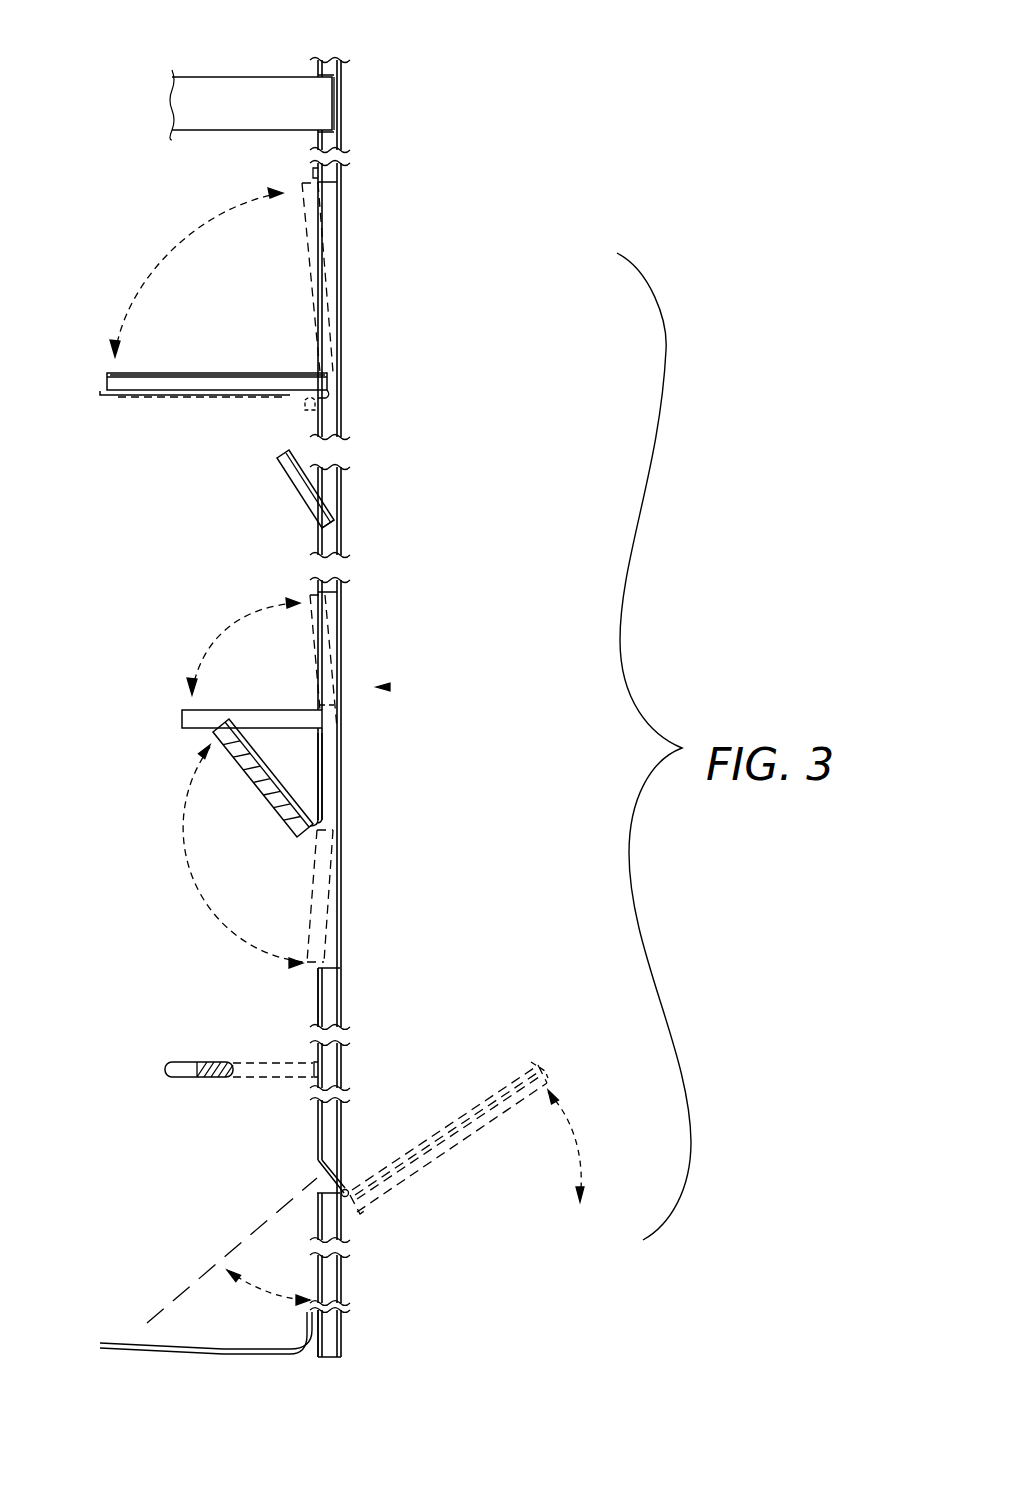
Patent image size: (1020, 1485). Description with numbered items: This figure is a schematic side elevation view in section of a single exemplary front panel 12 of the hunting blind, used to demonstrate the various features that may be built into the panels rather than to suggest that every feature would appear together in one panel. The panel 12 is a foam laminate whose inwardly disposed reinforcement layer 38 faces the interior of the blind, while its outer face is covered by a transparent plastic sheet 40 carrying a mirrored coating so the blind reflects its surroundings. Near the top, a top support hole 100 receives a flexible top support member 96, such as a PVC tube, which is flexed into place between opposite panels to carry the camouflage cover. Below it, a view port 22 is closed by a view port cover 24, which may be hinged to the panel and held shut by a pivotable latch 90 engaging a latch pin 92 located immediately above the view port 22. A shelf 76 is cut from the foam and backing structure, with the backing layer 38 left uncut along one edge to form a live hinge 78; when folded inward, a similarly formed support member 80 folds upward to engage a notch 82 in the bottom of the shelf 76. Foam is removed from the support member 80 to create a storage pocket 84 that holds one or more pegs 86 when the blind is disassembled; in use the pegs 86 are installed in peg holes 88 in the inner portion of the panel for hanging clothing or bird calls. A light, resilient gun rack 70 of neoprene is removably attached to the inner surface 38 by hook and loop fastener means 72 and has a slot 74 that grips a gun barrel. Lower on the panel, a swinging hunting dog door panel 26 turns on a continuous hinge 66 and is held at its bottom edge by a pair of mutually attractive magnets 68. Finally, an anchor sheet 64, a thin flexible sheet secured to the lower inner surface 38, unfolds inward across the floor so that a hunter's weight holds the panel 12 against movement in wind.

The front panel 12 is at (376, 688).
The view port 22 is at (336, 262).
The view port cover 24 is at (303, 252).
The hunting dog door panel 26 is at (400, 1200).
The second reinforcement layer 38 is at (215, 392).
The transparent plastic sheet 40 is at (200, 373).
The anchor sheet 64 is at (192, 1348).
The hinge 66 is at (305, 405).
The magnets 68 is at (343, 1306).
The gun rack 70 is at (215, 1062).
The hook and loop fastener means 72 is at (240, 1078).
The slot 74 is at (180, 1078).
The shelf 76 is at (315, 672).
The live hinge 78 is at (283, 376).
The support member 80 is at (300, 838).
The notch 82 is at (312, 640).
The storage pocket 84 is at (278, 833).
The peg 86 is at (292, 478).
The peg hole 88 is at (318, 527).
The pivotable latch 90 is at (118, 397).
The latch pin 92 is at (313, 172).
The top support member 96 is at (205, 130).
The top support hole 100 is at (318, 77).